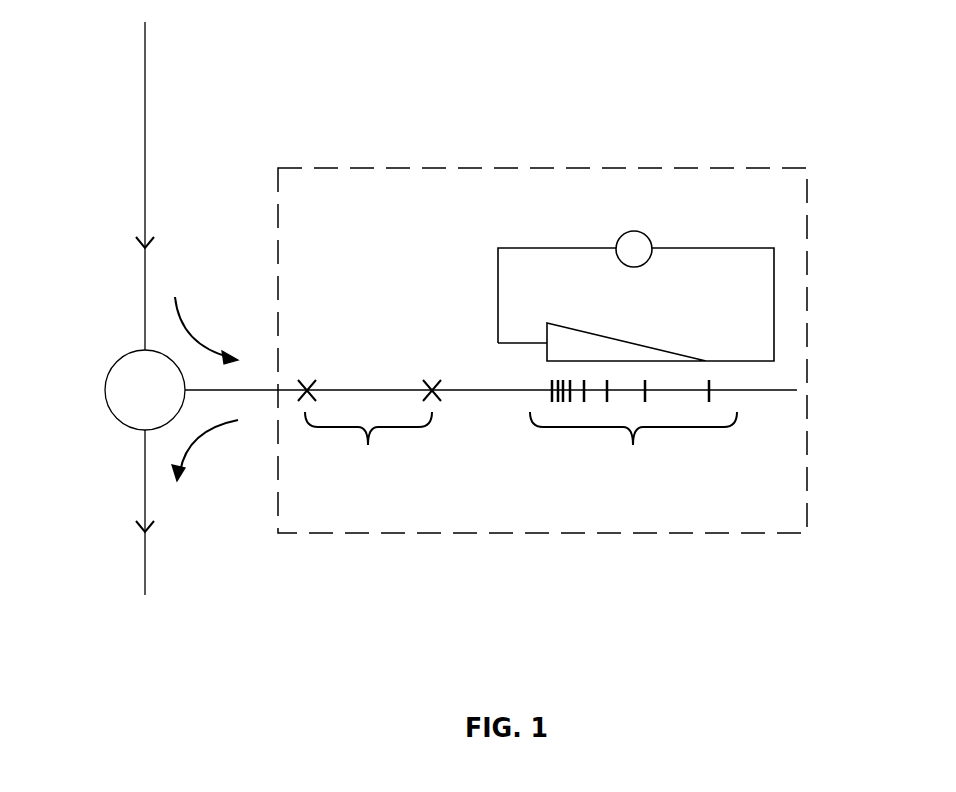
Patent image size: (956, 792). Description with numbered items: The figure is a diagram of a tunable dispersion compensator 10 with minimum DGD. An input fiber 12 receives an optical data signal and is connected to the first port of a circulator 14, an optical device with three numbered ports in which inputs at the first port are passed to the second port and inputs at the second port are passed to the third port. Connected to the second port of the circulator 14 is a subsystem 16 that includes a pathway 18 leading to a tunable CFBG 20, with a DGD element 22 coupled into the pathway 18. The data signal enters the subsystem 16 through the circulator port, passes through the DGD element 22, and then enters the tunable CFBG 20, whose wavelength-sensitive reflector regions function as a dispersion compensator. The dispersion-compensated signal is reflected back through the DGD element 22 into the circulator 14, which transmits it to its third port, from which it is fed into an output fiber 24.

The tunable dispersion compensator 10 is at (764, 78).
The input fiber 12 is at (188, 128).
The circulator 14 is at (111, 360).
The subsystem 16 is at (323, 208).
The pathway 18 is at (490, 390).
The tunable CFBG 20 is at (724, 476).
The DGD element 22 is at (455, 478).
The output fiber 24 is at (188, 584).